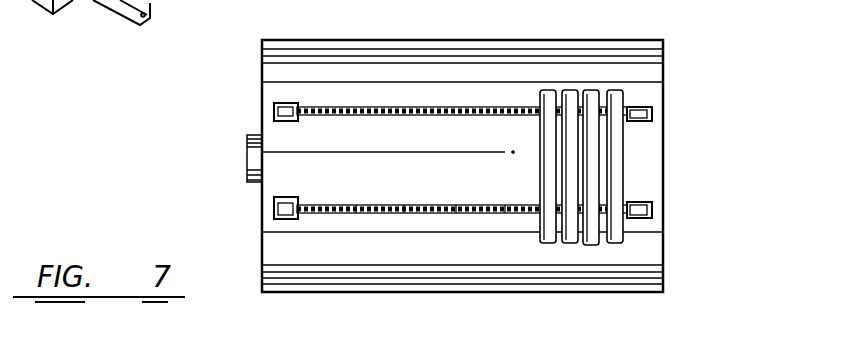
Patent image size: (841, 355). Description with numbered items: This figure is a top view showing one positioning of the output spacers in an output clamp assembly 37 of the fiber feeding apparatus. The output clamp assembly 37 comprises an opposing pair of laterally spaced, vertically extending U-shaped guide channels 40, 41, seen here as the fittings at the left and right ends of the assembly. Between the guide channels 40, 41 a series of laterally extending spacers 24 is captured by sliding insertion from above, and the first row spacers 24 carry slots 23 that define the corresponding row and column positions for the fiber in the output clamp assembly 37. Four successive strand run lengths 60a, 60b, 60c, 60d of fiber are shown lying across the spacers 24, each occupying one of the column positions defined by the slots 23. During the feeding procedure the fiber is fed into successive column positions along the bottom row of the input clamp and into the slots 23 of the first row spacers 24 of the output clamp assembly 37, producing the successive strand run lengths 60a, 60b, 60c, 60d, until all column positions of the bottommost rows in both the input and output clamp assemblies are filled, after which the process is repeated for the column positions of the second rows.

The slots 23 is at (503, 213).
The first row spacers 24 is at (402, 213).
The output clamp assembly 37 is at (312, 218).
The U-shaped guide channel 40 is at (275, 210).
The U-shaped guide channel 41 is at (652, 213).
The strand run length 60a is at (613, 147).
The strand run length 60b is at (590, 112).
The strand run length 60c is at (568, 195).
The strand run length 60d is at (546, 100).